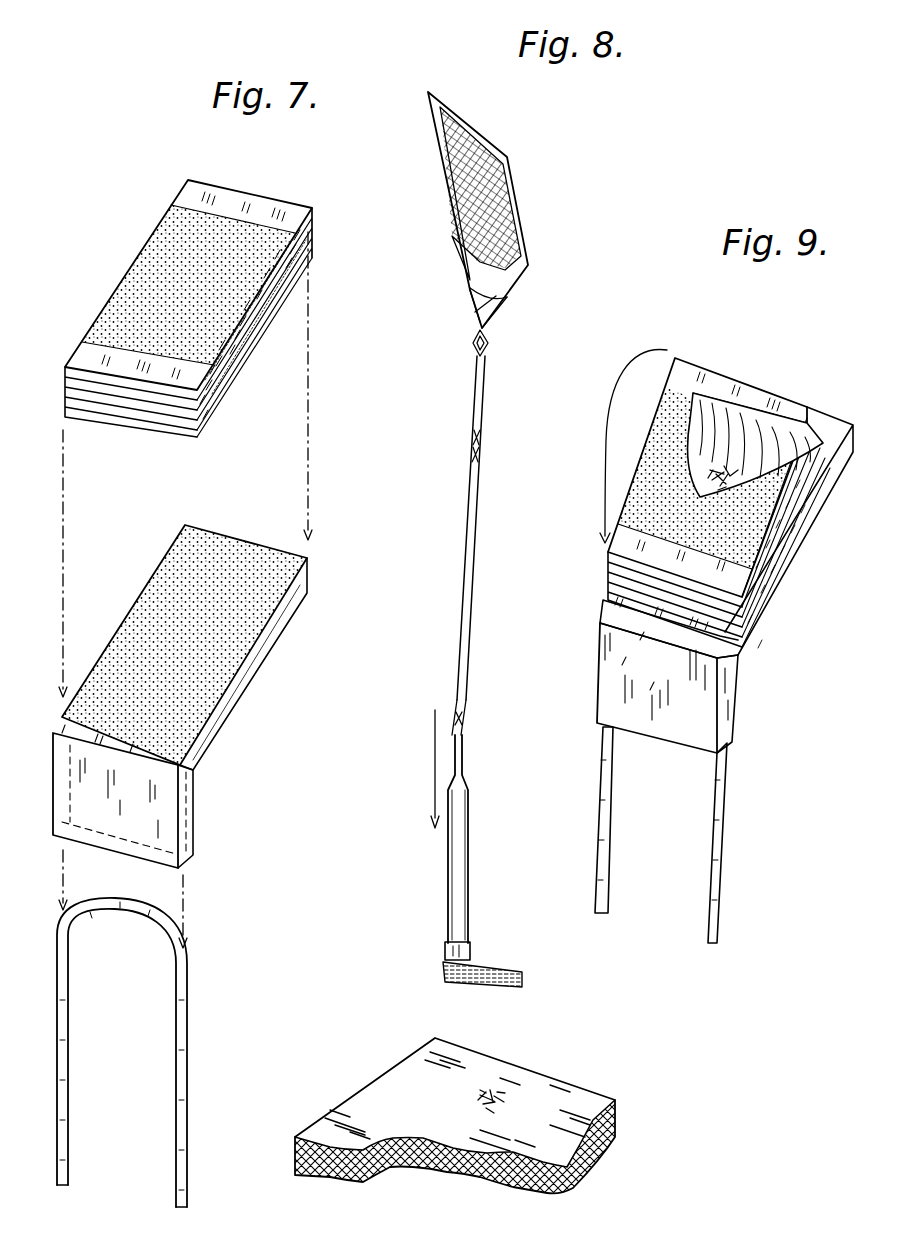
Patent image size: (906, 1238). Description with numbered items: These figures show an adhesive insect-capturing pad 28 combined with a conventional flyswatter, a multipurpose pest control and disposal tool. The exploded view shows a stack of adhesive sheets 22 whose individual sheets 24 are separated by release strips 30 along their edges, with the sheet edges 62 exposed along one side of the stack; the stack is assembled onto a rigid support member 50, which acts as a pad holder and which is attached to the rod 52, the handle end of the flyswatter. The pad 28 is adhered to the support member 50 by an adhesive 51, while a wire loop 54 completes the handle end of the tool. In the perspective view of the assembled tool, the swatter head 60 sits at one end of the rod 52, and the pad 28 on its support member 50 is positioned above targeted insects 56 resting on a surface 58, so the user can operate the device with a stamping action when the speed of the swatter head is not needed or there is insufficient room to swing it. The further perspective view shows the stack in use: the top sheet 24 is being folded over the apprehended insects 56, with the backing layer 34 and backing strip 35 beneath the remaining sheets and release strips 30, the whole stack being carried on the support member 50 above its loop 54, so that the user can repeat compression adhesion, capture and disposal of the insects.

In FIG. 7, the laminated sheet stack 22 is at (118, 283).
In FIG. 7, the adhesive sheet layer 24 is at (167, 228).
In FIG. 9, the adhesive sheet layer 24 is at (690, 430).
In FIG. 7, the pad 28 is at (332, 244).
In FIG. 8, the pad 28 is at (415, 976).
In FIG. 7, the release strip 30 is at (288, 210).
In FIG. 9, the release strip 30 is at (767, 392).
In FIG. 9, the backing layer 34 is at (825, 430).
In FIG. 9, the backing strip 35 is at (840, 423).
In FIG. 7, the rigid support member 50 is at (55, 786).
In FIG. 8, the rigid support member 50 is at (470, 953).
In FIG. 9, the rigid support member 50 is at (605, 672).
In FIG. 7, the adhesive 51 is at (150, 618).
In FIG. 8, the rod 52 is at (470, 863).
In FIG. 7, the wire loop 54 is at (183, 1030).
In FIG. 9, the wire loop 54 is at (723, 822).
In FIG. 8, the insect 56 is at (493, 1090).
In FIG. 9, the insect 56 is at (700, 487).
In FIG. 8, the pad 58 is at (562, 1097).
In FIG. 8, the swatter head 60 is at (432, 135).
In FIG. 7, the adhesive layer edge 62 is at (243, 367).